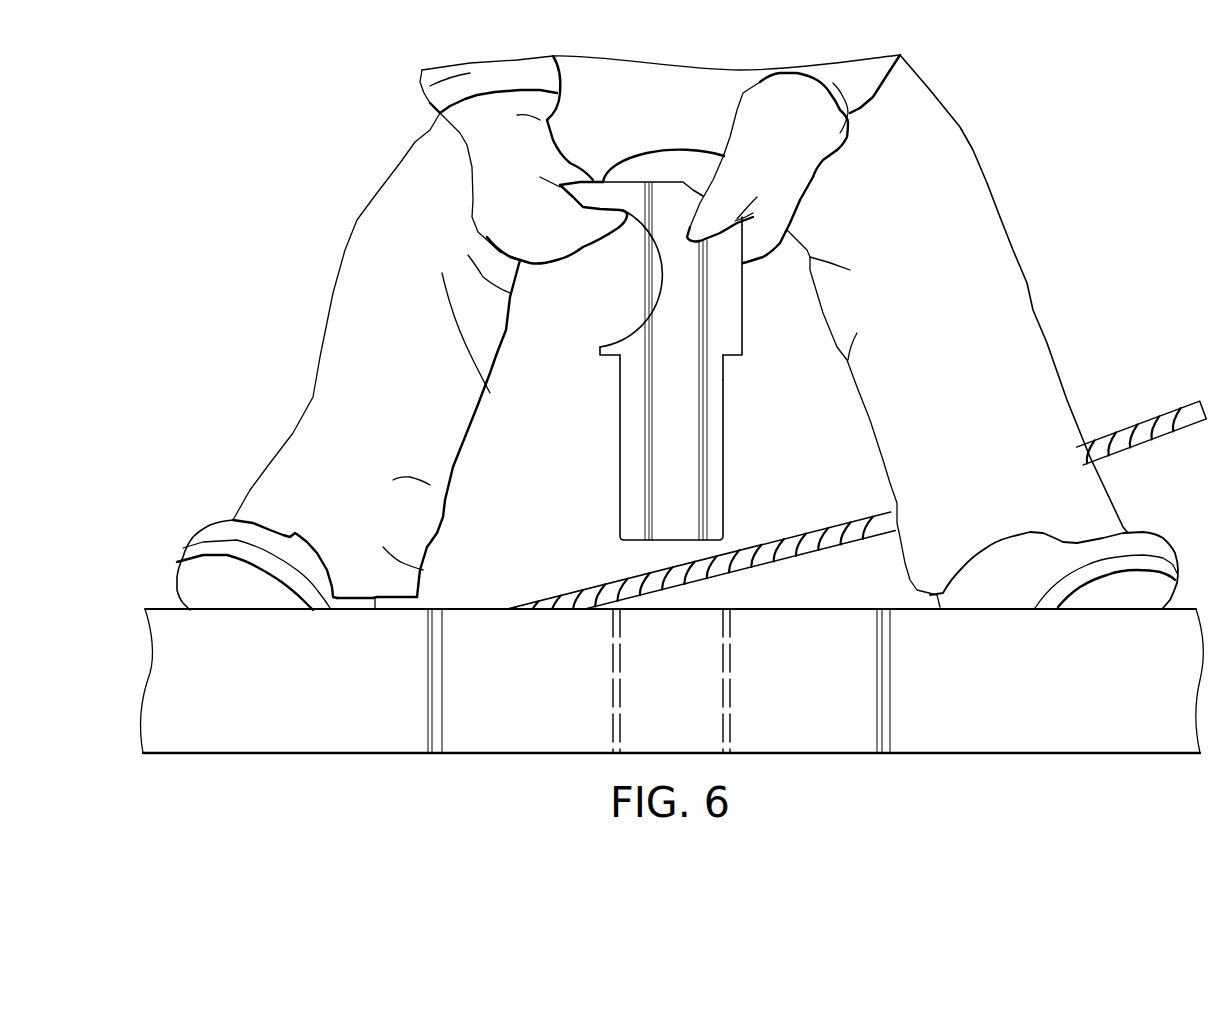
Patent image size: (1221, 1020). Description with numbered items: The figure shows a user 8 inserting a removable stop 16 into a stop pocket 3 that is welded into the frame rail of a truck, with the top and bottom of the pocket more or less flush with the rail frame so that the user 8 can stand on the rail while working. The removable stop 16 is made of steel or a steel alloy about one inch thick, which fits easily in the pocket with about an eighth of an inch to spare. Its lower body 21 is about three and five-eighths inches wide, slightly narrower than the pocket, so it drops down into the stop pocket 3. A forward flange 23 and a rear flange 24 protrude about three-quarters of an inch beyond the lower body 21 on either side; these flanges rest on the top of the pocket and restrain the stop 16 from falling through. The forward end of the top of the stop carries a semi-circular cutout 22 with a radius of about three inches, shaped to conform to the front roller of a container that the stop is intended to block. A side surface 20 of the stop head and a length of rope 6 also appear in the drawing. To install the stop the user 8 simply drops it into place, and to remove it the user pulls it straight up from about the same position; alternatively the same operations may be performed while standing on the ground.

The stop pocket 3 is at (698, 732).
The rope 6 is at (852, 473).
The user 8 is at (939, 316).
The removable stop 16 is at (674, 345).
The head side edge 20 is at (747, 322).
The lower body 21 is at (727, 482).
The semi-circular cutout 22 is at (663, 282).
The forward flange 23 is at (597, 360).
The rear flange 24 is at (742, 357).